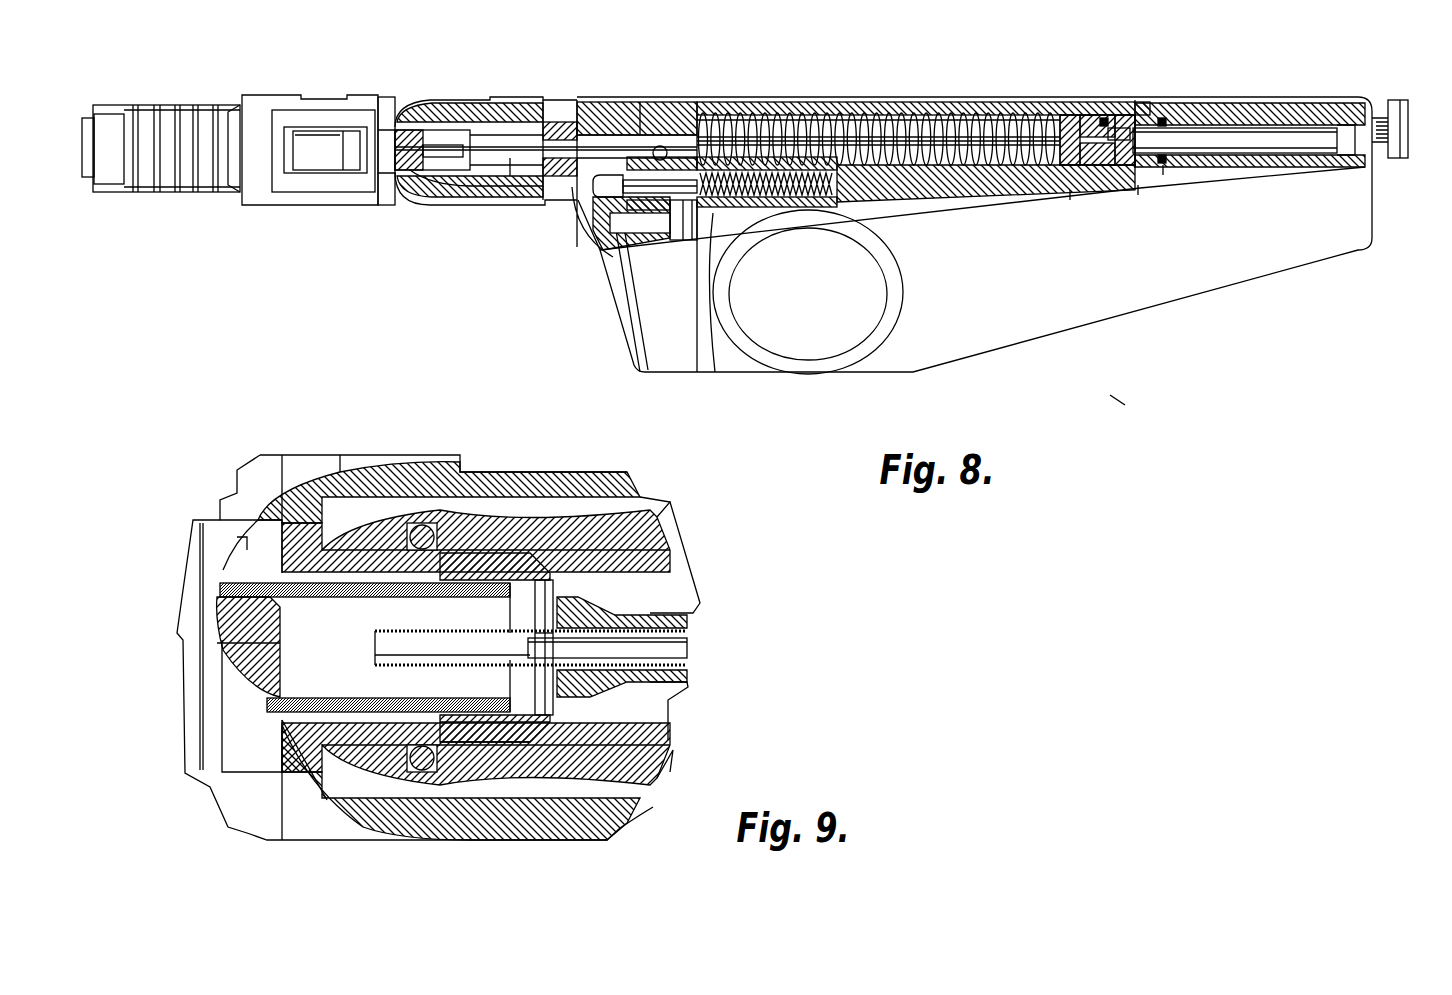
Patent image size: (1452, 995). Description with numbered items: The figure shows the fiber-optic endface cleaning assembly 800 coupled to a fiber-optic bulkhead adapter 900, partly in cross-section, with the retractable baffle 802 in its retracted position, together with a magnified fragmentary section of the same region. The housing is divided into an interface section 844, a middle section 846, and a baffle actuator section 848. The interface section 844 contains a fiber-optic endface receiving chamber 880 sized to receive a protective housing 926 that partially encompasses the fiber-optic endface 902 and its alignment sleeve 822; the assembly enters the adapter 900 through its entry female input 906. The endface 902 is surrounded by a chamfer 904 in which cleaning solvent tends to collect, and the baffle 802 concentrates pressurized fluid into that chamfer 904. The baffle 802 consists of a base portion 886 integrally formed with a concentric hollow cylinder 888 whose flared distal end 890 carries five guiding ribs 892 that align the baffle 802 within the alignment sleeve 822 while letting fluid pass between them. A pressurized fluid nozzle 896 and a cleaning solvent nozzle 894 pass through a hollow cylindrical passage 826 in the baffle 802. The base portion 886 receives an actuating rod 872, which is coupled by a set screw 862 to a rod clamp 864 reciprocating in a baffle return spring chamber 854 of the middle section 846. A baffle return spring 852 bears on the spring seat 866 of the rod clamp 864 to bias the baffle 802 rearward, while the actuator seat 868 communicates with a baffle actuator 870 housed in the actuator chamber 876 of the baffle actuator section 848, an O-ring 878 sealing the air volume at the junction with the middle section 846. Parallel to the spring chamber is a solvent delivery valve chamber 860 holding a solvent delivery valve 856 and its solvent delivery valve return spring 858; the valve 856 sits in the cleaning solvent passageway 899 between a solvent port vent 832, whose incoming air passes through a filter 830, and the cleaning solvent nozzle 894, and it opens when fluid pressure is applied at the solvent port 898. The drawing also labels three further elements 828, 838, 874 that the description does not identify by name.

In FIG. 8, the fiber-optic endface cleaning assembly 800 is at (1120, 405).
In FIG. 8, the baffle 802 is at (518, 100).
In FIG. 9, the baffle 802 is at (668, 683).
In FIG. 9, the alignment sleeve 822 is at (505, 722).
In FIG. 9, the hollow cylindrical passage 826 is at (633, 692).
In FIG. 8, the ball detent 828 is at (668, 146).
In FIG. 8, the filter 830 is at (668, 245).
In FIG. 8, the solvent port vent 832 is at (625, 247).
In FIG. 8, the piston 838 is at (1096, 103).
In FIG. 8, the interface section 844 is at (592, 100).
In FIG. 8, the middle section 846 is at (714, 100).
In FIG. 8, the baffle actuator section 848 is at (1280, 100).
In FIG. 8, the baffle return spring 852 is at (757, 100).
In FIG. 8, the baffle return spring chamber 854 is at (836, 100).
In FIG. 8, the solvent delivery valve 856 is at (600, 215).
In FIG. 8, the solvent delivery valve return spring 858 is at (920, 335).
In FIG. 8, the solvent delivery valve chamber 860 is at (700, 372).
In FIG. 8, the set screw 862 is at (1112, 110).
In FIG. 8, the rod clamp 864 is at (1138, 190).
In FIG. 8, the spring seat 866 is at (1070, 192).
In FIG. 8, the actuator seat 868 is at (1163, 170).
In FIG. 8, the baffle actuator 870 is at (1300, 150).
In FIG. 8, the actuating rod 872 is at (560, 100).
In FIG. 8, the pin 874 is at (638, 100).
In FIG. 8, the actuator chamber 876 is at (1320, 110).
In FIG. 8, the O-ring 878 is at (1165, 118).
In FIG. 8, the fiber-optic endface receiving chamber 880 is at (447, 98).
In FIG. 9, the fiber-optic endface receiving chamber 880 is at (497, 520).
In FIG. 8, the base portion 886 is at (508, 200).
In FIG. 9, the hollow cylinder 888 is at (668, 613).
In FIG. 9, the flared distal end 890 is at (605, 600).
In FIG. 9, the guiding ribs 892 is at (578, 597).
In FIG. 9, the cleaning solvent nozzle 894 is at (395, 680).
In FIG. 9, the pressurized fluid nozzle 896 is at (530, 680).
In FIG. 8, the solvent port 898 is at (577, 205).
In FIG. 8, the cleaning solvent passageway 899 is at (580, 197).
In FIG. 8, the fiber-optic bulkhead adapter 900 is at (273, 90).
In FIG. 9, the fiber-optic bulkhead adapter 900 is at (322, 448).
In FIG. 9, the fiber-optic endface 902 is at (283, 630).
In FIG. 9, the chamfer 904 is at (222, 600).
In FIG. 9, the entry female input 906 is at (345, 808).
In FIG. 9, the protective housing 926 is at (455, 745).